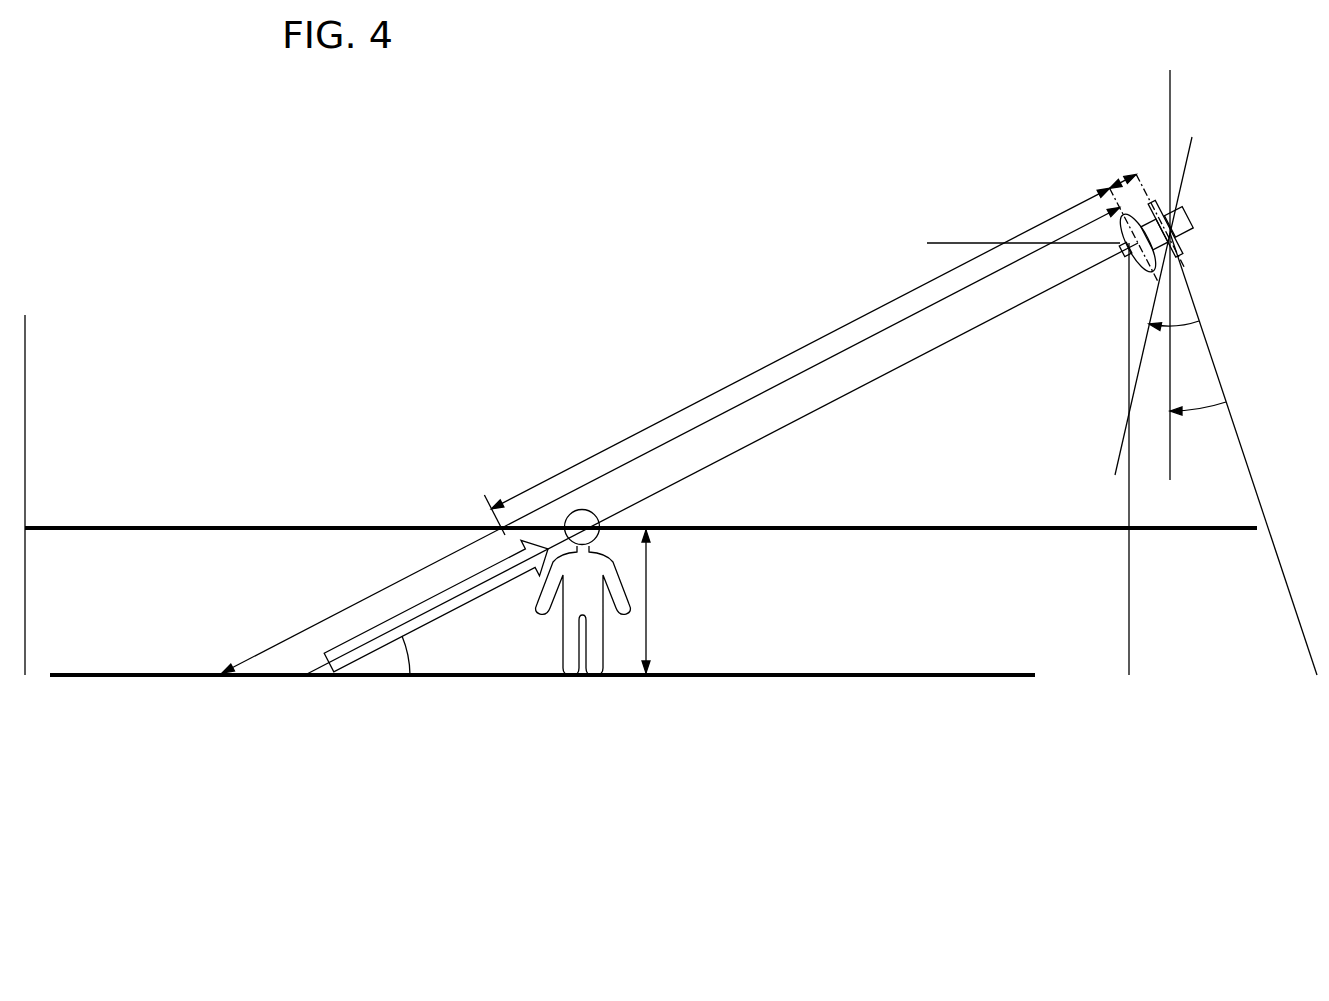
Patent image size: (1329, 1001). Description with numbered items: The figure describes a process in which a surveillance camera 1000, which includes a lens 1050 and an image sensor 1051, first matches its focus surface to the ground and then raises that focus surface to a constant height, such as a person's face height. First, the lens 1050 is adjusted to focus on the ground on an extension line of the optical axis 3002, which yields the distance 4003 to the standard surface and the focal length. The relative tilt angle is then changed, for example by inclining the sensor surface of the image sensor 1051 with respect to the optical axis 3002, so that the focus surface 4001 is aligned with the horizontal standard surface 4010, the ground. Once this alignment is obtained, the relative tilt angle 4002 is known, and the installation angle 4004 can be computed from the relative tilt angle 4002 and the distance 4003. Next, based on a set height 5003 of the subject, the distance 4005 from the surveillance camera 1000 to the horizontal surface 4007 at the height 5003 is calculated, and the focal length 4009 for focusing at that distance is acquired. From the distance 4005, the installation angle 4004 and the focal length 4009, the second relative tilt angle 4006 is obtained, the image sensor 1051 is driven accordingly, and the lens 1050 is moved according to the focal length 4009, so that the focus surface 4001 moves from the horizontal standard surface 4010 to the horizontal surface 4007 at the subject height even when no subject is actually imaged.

The focus surface 4001 is at (627, 679).
The relative tilt angle 4002 is at (1204, 445).
The distance to the standard surface 4003 is at (327, 584).
The installation angle 4004 is at (418, 677).
The distance from the surveillance camera to the surface 4005 is at (793, 312).
The relative tilt angle 4006 is at (1189, 366).
The horizontal surface 4007 is at (1000, 532).
The focal length 4009 is at (1106, 157).
The horizontal standard surface 4010 is at (1205, 679).
The surveillance camera 1000 is at (1186, 218).
The lens 1050 is at (1140, 272).
The image sensor 1051 is at (1158, 203).
The optical axis 3002 is at (822, 412).
The height of the subject 5003 is at (668, 612).